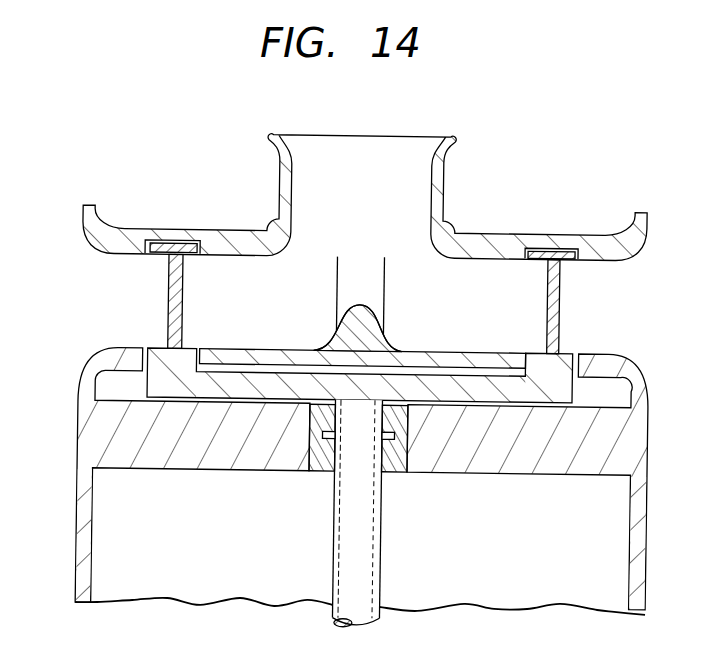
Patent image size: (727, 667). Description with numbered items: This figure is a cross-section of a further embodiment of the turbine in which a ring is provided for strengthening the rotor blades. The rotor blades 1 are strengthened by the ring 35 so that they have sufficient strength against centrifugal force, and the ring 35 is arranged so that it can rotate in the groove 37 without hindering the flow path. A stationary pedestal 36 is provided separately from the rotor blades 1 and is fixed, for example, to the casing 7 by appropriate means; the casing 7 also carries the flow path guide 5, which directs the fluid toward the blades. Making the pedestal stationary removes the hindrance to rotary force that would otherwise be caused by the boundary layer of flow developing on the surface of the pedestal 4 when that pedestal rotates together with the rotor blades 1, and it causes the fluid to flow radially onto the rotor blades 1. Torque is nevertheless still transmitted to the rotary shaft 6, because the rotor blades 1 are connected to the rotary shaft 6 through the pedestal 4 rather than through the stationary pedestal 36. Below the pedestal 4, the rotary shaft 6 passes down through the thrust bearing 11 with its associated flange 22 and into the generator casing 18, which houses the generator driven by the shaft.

The rotor blade 1 is at (166, 287).
The pedestal 4 is at (272, 401).
The flow path guide 5 is at (380, 336).
The rotary shaft 6 is at (378, 581).
The casing 7 is at (466, 233).
The thrust bearing 11 is at (324, 447).
The generator casing 18 is at (645, 453).
The flange 22 is at (393, 442).
The ring 35 is at (190, 246).
The stationary pedestal 36 is at (254, 351).
The groove 37 is at (172, 243).